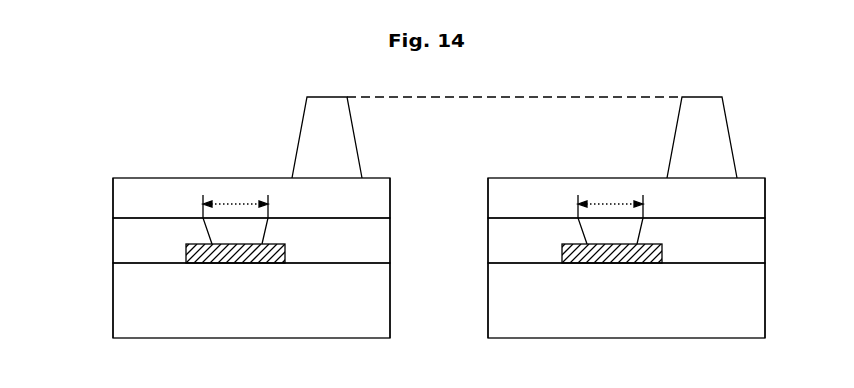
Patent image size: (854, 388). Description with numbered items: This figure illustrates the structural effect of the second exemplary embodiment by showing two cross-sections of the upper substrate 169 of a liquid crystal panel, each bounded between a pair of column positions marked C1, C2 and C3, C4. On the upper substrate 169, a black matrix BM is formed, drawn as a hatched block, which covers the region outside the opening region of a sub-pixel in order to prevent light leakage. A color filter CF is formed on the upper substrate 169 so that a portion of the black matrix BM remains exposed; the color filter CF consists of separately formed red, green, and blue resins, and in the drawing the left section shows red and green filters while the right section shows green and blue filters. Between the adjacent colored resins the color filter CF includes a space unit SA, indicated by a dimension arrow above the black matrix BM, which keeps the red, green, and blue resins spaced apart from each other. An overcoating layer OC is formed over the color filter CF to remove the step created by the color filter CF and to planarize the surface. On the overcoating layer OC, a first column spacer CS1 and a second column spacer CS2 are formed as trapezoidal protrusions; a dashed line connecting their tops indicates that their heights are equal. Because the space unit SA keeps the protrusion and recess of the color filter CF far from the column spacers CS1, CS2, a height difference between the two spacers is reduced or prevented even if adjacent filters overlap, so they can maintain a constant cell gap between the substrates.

The first column spacer CS1 is at (309, 138).
The second column spacer CS2 is at (719, 140).
The overcoating layer OC is at (122, 200).
The color filter CF is at (122, 245).
The upper substrate 169 is at (122, 304).
The black matrix BM is at (240, 252).
The space unit SA is at (423, 213).
The first column C1 is at (115, 273).
The second column C2 is at (390, 273).
The third column C3 is at (491, 273).
The fourth column C4 is at (768, 273).